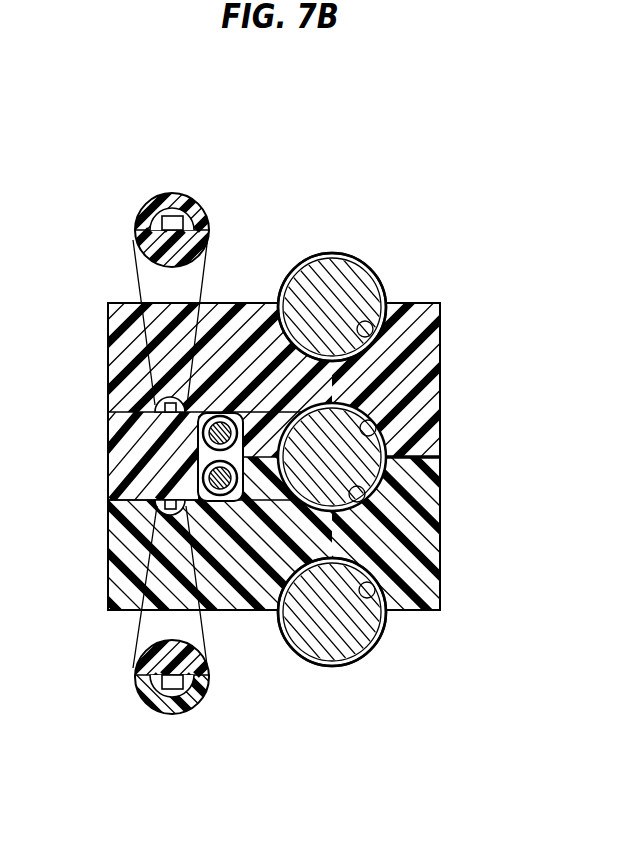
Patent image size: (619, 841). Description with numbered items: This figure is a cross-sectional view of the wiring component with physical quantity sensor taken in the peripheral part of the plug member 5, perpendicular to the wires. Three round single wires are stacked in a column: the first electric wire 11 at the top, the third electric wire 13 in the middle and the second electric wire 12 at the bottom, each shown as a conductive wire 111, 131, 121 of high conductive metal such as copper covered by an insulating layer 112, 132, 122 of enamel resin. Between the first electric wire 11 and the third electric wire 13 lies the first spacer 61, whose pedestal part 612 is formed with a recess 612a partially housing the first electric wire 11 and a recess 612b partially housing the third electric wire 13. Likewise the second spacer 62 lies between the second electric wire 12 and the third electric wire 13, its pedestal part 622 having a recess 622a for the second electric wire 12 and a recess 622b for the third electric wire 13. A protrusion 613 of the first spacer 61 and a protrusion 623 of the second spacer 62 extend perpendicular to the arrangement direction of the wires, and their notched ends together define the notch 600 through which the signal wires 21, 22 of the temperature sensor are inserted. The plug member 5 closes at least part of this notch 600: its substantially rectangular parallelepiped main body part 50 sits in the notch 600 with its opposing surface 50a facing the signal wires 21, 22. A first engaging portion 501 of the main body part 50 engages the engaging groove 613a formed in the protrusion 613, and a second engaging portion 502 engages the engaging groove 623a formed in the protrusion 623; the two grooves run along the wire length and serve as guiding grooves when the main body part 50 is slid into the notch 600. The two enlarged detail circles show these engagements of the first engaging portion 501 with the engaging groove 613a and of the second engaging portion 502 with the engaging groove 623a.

The plug member 5 is at (107, 427).
The first electric wire 11 is at (308, 202).
The conductive wire 111 is at (342, 270).
The insulating layer 112 is at (315, 260).
The second electric wire 12 is at (308, 718).
The conductive wire 121 is at (350, 633).
The insulating layer 122 is at (303, 657).
The third electric wire 13 is at (498, 468).
The conductive wire 131 is at (390, 463).
The insulating layer 132 is at (393, 488).
The signal wire 21 is at (237, 424).
The signal wire 22 is at (240, 485).
The main body part 50 is at (112, 466).
The opposing surface 50a is at (198, 447).
The first engaging portion 501 is at (162, 212).
The second engaging portion 502 is at (165, 694).
The notch 600 is at (101, 507).
The first spacer 61 is at (114, 296).
The pedestal part 612 is at (430, 330).
The recess 612a is at (366, 328).
The recess 612b is at (372, 430).
The protrusion 613 is at (115, 333).
The engaging groove 613a is at (181, 208).
The second spacer 62 is at (112, 625).
The pedestal part 622 is at (432, 588).
The recess 622a is at (378, 614).
The recess 622b is at (362, 497).
The protrusion 623 is at (116, 581).
The engaging groove 623a is at (182, 695).